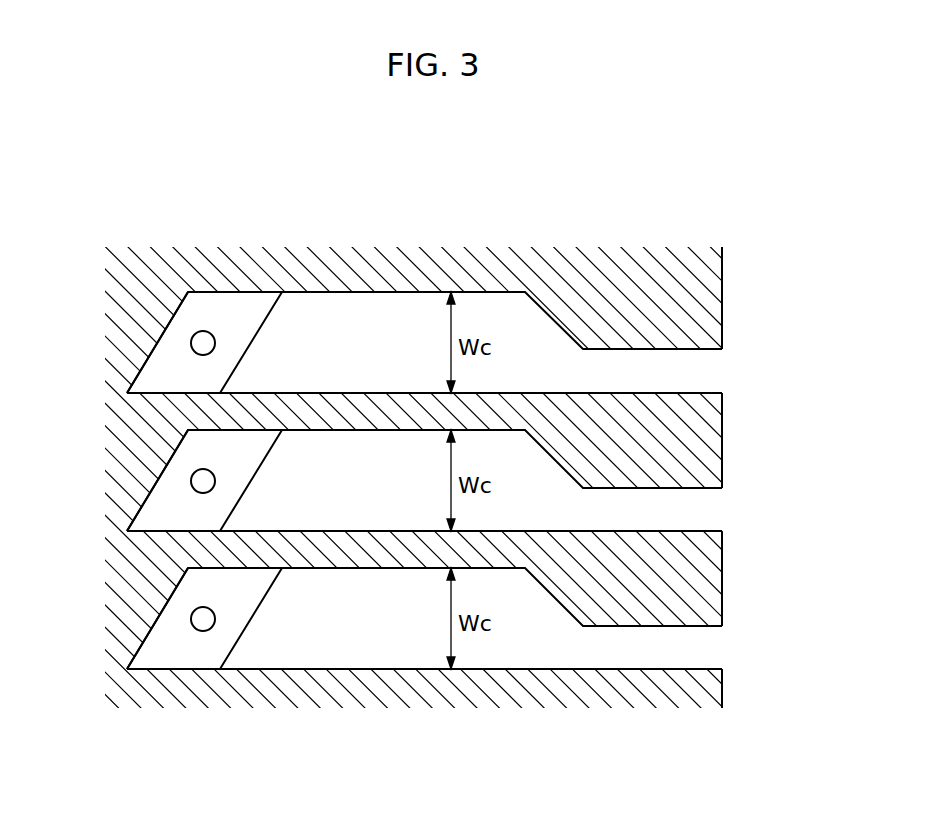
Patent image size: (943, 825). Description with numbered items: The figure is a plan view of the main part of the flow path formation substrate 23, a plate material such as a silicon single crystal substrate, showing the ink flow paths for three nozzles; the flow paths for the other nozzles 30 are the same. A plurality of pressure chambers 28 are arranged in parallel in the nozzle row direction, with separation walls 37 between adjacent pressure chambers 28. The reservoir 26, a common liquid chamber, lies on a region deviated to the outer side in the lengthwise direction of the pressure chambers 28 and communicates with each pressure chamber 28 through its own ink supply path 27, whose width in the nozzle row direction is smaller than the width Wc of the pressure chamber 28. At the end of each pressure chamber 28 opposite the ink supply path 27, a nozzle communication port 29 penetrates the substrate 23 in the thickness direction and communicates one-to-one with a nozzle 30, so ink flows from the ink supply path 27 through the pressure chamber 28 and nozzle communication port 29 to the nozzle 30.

The flow path formation substrate 23 is at (640, 176).
The reservoir 26 is at (757, 481).
The ink supply path 27 is at (675, 513).
The pressure chamber 28 is at (386, 337).
The nozzle communication port 29 is at (170, 625).
The nozzle 30 is at (196, 470).
The separation wall 37 is at (300, 545).